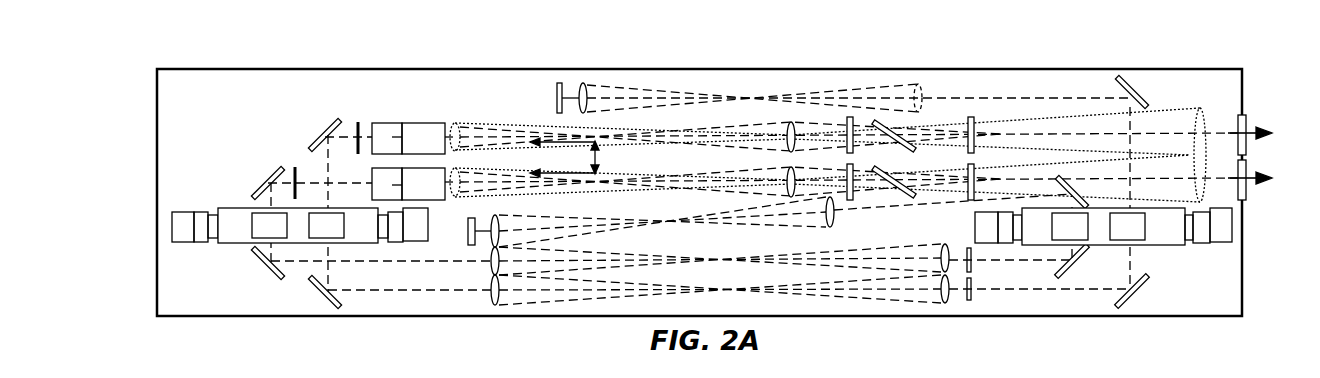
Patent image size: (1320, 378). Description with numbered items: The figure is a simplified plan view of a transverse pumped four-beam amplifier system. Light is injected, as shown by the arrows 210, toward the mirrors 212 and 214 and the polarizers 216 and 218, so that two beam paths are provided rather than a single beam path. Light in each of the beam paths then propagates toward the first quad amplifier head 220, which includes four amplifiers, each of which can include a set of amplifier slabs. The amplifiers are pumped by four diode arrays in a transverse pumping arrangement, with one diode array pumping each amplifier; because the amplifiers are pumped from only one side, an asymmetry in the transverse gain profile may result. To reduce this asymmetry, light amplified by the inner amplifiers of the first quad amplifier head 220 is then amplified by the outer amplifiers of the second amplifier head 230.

The arrows 210 is at (614, 159).
The mirror 212 is at (434, 123).
The mirror 214 is at (432, 187).
The polarizer 216 is at (387, 123).
The polarizer 218 is at (384, 176).
The first quad amplifier head 220 is at (311, 308).
The amplifier head 230 is at (1121, 331).